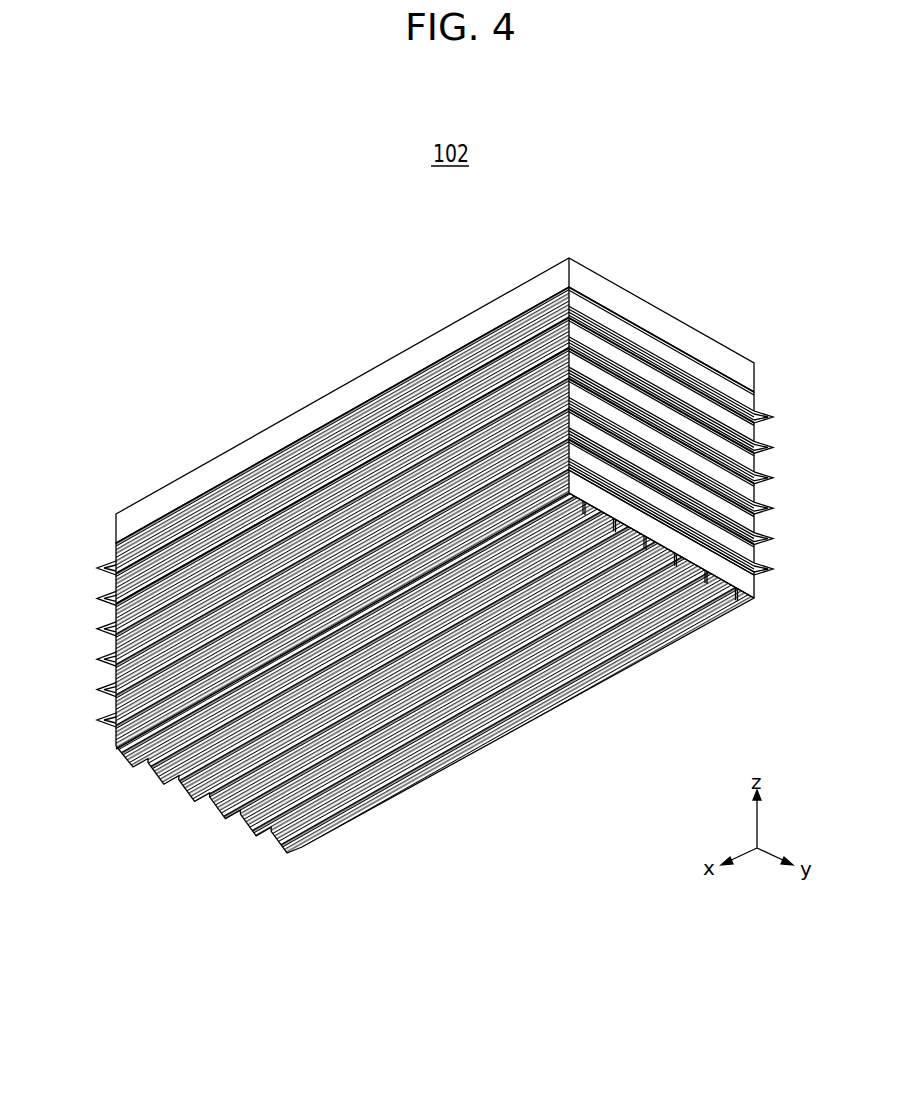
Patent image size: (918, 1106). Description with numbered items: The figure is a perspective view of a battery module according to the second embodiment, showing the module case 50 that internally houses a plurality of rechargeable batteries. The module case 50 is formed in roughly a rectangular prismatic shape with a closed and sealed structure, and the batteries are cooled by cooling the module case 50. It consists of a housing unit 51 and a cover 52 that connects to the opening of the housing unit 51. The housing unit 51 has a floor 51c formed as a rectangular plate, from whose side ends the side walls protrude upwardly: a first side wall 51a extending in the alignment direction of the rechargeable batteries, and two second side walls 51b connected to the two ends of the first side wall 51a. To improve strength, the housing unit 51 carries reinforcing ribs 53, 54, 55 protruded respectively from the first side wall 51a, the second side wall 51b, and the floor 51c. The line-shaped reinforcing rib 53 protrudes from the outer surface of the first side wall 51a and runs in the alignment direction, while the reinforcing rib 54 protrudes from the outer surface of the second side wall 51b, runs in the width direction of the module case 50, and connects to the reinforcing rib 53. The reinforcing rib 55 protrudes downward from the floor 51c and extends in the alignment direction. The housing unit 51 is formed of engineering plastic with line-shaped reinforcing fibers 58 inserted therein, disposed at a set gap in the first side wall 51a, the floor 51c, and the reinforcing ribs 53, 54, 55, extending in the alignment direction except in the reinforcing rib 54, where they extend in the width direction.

The module case 50 is at (657, 296).
The housing unit 51 is at (756, 492).
The first side wall 51a is at (318, 462).
The second side wall 51b is at (748, 585).
The floor 51c is at (664, 612).
The cover 52 is at (463, 330).
The reinforcing rib 53 is at (180, 522).
The reinforcing rib 54 is at (765, 412).
The reinforcing rib 55 is at (497, 735).
The reinforcing fiber 58 is at (264, 489).